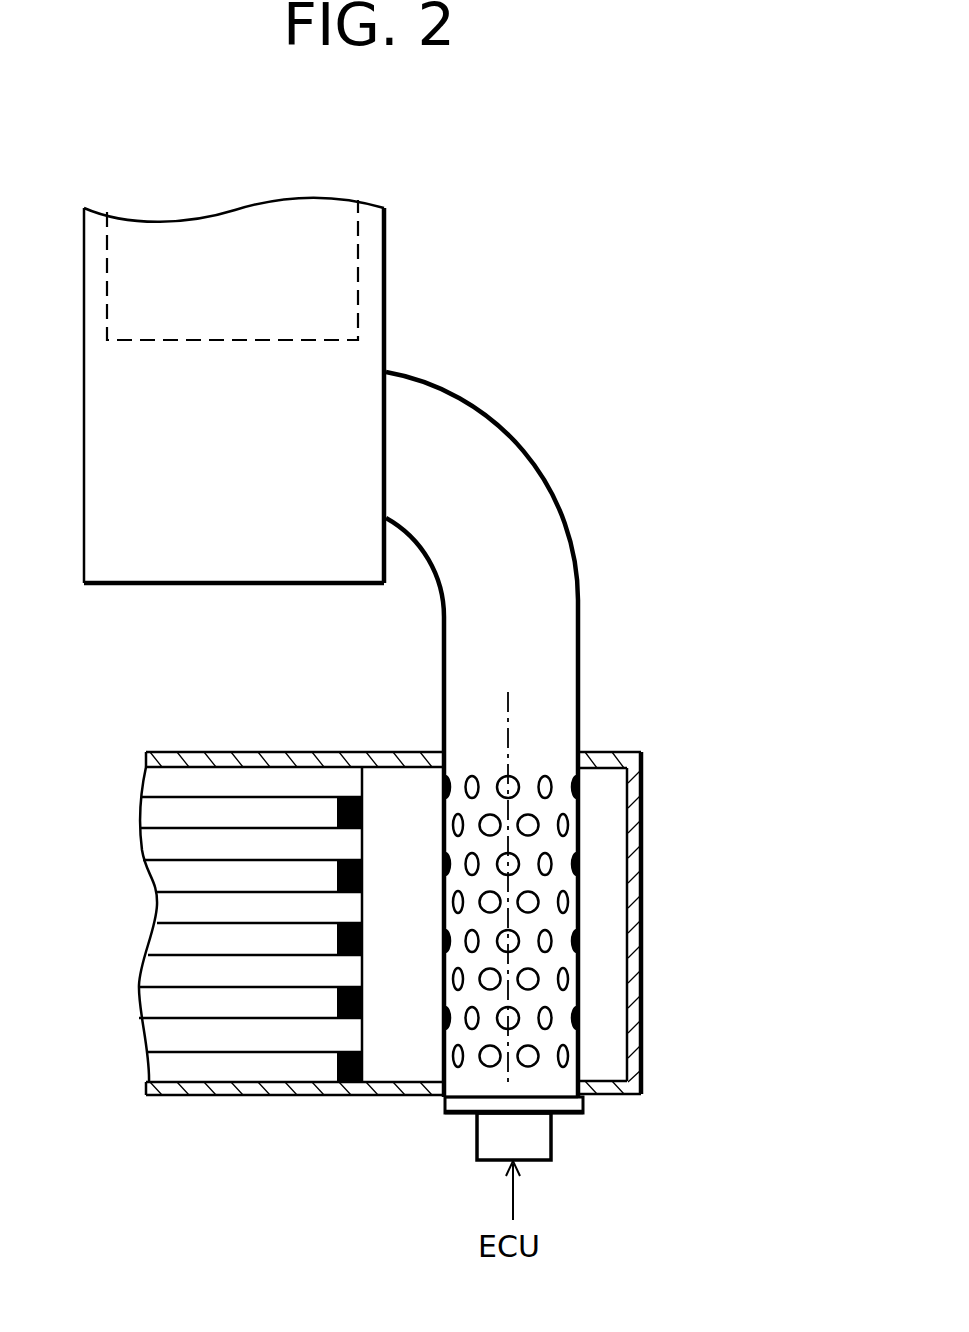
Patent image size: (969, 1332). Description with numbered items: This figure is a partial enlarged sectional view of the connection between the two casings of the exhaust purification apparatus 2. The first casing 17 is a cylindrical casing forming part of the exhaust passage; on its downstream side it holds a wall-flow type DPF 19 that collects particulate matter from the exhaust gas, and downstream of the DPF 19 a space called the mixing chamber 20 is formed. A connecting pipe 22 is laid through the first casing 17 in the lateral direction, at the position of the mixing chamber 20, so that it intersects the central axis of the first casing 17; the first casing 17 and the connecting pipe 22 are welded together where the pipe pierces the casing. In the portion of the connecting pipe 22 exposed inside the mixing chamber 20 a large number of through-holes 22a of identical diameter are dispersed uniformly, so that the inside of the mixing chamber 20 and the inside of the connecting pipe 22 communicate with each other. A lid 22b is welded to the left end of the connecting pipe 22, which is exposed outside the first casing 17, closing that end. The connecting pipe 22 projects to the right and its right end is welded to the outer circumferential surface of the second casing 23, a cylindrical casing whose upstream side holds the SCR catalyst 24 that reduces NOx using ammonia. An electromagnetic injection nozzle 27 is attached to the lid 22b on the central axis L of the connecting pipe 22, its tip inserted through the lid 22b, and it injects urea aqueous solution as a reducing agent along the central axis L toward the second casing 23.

The exhaust purification apparatus 2 is at (583, 244).
The first casing 17 is at (203, 1097).
The DPF (diesel particulate filter) 19 is at (283, 1097).
The mixing chamber 20 is at (402, 1040).
The connecting pipe 22 is at (535, 549).
The through-holes 22a is at (530, 907).
The lid 22b is at (586, 1108).
The second casing 23 is at (125, 442).
The SCR catalyst 24 is at (105, 270).
The injection nozzle 27 is at (537, 1138).
The central axis L is at (512, 722).